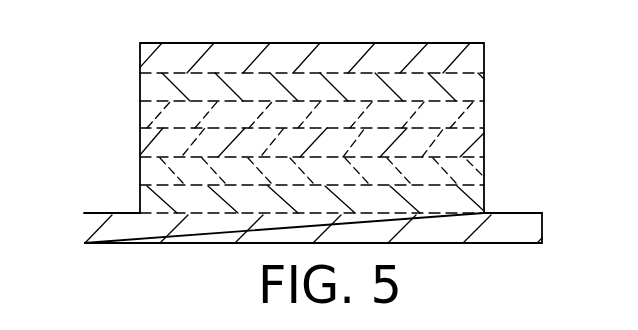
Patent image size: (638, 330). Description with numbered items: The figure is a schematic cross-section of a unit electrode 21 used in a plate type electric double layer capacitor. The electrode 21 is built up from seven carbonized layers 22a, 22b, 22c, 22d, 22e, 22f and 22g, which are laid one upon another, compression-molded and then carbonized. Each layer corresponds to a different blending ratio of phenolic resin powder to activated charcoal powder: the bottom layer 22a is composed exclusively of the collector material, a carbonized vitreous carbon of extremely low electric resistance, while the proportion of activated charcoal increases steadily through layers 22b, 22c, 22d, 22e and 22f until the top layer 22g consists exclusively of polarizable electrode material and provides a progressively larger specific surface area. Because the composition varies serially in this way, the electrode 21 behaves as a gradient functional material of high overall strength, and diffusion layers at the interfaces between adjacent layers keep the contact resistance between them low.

The unit electrode 21 is at (126, 118).
The carbonized layer 22a is at (528, 228).
The carbonized layer 22b is at (483, 190).
The carbonized layer 22c is at (483, 163).
The carbonized layer 22d is at (483, 135).
The carbonized layer 22e is at (483, 110).
The carbonized layer 22f is at (483, 78).
The carbonized layer 22g is at (483, 50).